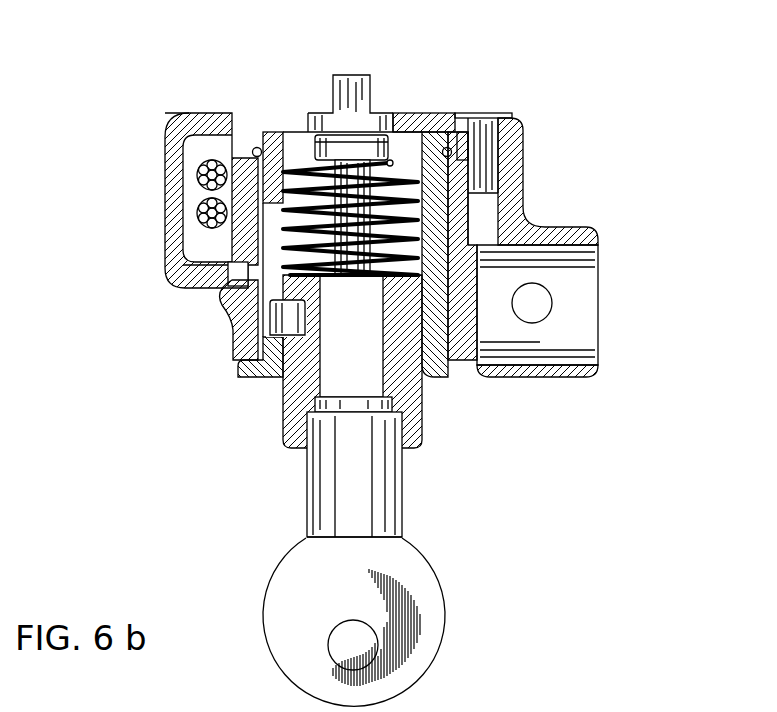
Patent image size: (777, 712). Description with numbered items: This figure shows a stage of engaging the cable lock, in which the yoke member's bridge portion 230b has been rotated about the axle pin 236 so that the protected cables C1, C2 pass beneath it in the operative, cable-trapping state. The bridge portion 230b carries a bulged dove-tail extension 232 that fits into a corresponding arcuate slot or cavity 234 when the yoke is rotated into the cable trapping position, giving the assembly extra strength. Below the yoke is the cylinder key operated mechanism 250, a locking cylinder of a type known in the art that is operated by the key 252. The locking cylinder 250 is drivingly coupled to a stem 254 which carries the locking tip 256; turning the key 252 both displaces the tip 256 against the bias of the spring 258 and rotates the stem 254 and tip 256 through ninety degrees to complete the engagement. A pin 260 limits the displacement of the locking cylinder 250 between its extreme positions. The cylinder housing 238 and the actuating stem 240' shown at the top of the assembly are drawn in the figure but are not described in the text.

The stem / actuating pin 240' is at (279, 86).
The locking tip 256 is at (313, 147).
The housing cover 238 is at (388, 114).
The axle pin 236 is at (485, 148).
The stem 254 is at (305, 190).
The spring 258 is at (408, 263).
The protected cable C1 is at (203, 166).
The protected cable C2 is at (203, 205).
The bridge portion 230b is at (173, 238).
The dove-tail extension 232 is at (233, 281).
The arcuate slot 234 is at (223, 300).
The pin 260 is at (280, 318).
The cylinder key operated mechanism 250 is at (263, 415).
The key 252 is at (290, 576).